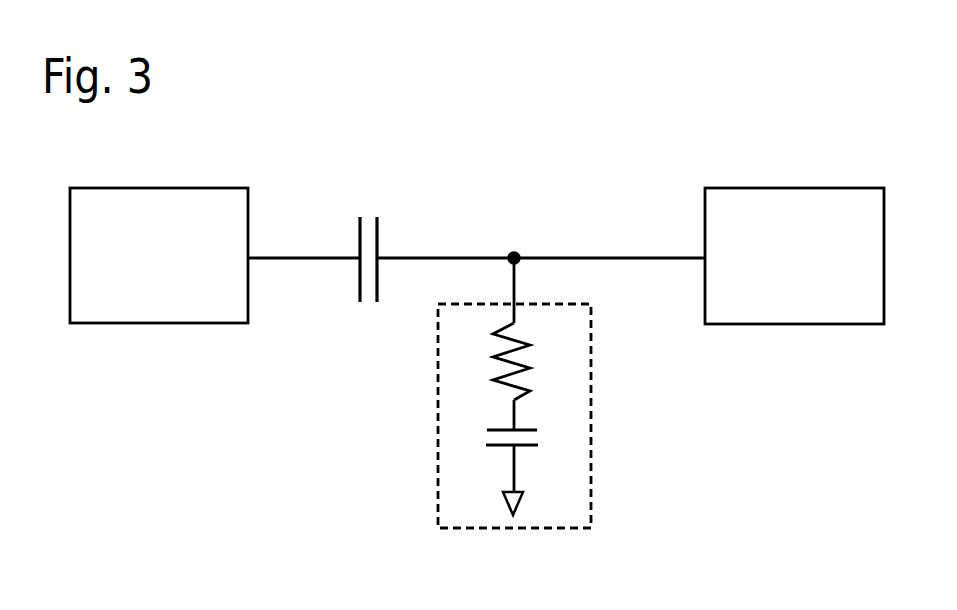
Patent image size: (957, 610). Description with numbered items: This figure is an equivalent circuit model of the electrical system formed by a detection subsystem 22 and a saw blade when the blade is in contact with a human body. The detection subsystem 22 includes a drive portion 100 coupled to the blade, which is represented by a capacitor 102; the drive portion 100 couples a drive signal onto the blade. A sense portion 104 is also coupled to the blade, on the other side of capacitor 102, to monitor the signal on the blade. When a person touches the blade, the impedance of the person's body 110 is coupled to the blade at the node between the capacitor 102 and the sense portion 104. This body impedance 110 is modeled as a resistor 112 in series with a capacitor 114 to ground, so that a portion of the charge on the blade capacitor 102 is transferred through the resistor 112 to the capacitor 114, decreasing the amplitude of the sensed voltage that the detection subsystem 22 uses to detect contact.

The detection subsystem 22 is at (727, 100).
The drive portion 100 is at (177, 188).
The capacitor 102 is at (400, 198).
The sense portion 104 is at (817, 188).
The impedance of the person's body 110 is at (437, 443).
The resistor 112 is at (530, 368).
The capacitor 114 is at (523, 448).